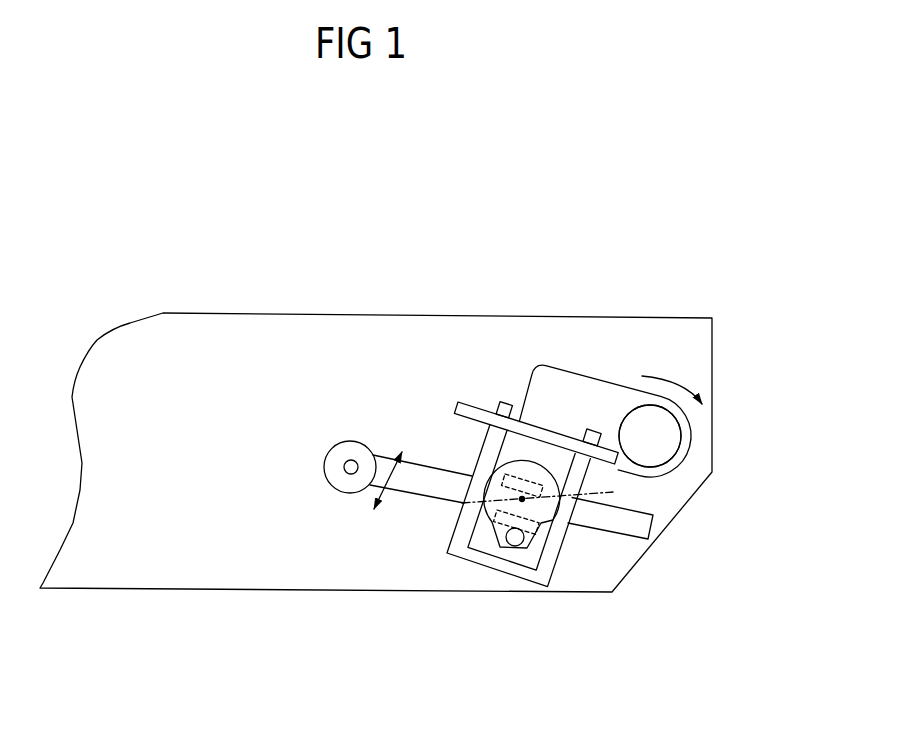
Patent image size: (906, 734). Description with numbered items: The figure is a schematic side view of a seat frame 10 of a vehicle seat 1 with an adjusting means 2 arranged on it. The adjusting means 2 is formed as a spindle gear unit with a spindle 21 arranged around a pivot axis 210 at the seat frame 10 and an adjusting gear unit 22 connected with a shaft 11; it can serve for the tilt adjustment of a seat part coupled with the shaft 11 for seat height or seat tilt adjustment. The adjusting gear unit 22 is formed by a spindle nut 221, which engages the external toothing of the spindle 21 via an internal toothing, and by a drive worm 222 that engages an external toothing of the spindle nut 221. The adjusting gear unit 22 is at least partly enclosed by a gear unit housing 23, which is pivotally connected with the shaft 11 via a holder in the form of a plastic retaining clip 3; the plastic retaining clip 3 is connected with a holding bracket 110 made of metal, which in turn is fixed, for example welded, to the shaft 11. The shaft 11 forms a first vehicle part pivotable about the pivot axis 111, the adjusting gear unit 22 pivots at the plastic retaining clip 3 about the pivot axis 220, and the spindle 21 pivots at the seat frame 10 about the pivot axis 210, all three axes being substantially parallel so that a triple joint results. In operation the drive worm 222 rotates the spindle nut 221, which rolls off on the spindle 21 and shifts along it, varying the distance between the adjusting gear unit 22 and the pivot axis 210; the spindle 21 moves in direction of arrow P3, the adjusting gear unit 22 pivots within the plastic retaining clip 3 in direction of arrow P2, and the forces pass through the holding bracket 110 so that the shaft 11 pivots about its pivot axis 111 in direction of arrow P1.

The vehicle seat 1 is at (556, 293).
The seat frame 10 is at (208, 558).
The shaft 11 is at (666, 441).
The holding bracket 110 is at (582, 391).
The pivot axis 111 is at (653, 448).
The adjusting means 2 is at (448, 567).
The spindle 21 is at (433, 487).
The pivot axis 210 is at (331, 481).
The adjusting gear unit 22 is at (545, 525).
The pivot axis 220 is at (519, 494).
The spindle nut 221 is at (507, 480).
The drive worm 222 is at (514, 547).
The gear unit housing 23 is at (482, 548).
The plastic retaining clip 3 is at (539, 584).
The arrow P1 is at (686, 378).
The arrow P2 is at (554, 493).
The arrow P3 is at (393, 498).